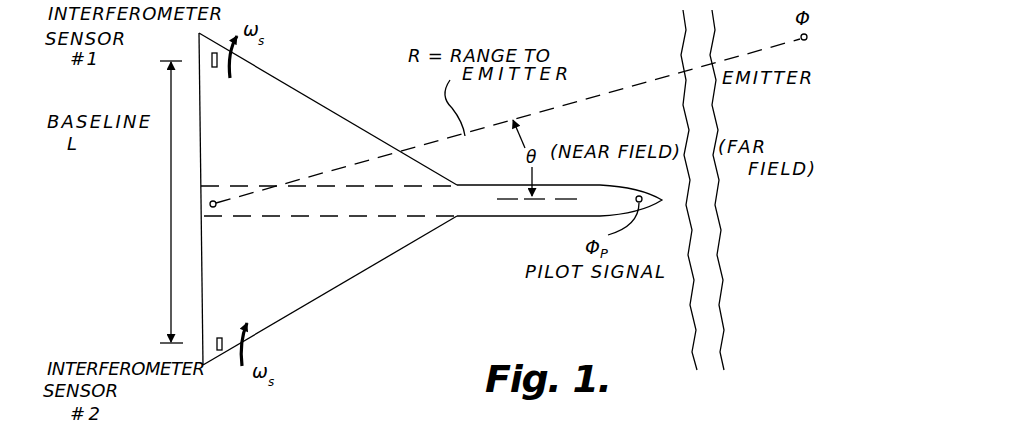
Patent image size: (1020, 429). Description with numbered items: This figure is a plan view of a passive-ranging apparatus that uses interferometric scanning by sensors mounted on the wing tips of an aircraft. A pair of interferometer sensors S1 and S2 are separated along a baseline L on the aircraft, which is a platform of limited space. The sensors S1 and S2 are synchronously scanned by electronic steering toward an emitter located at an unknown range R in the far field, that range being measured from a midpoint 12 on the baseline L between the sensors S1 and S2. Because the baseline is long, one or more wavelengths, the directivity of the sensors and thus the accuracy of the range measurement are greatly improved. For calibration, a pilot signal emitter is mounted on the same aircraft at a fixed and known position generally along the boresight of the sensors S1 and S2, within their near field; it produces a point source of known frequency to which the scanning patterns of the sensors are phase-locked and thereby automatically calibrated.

The midpoint 12 is at (205, 213).
The interferometer sensor S1 is at (212, 56).
The interferometer sensor S2 is at (221, 352).